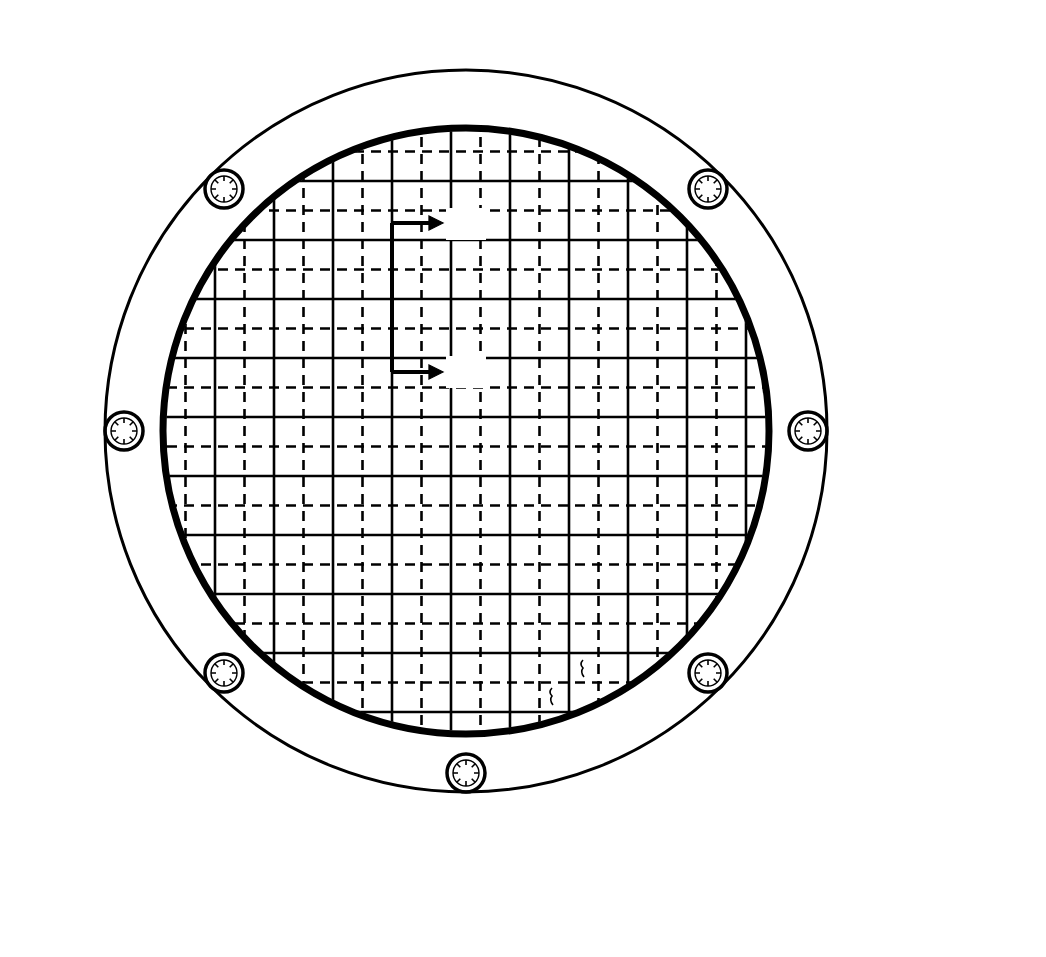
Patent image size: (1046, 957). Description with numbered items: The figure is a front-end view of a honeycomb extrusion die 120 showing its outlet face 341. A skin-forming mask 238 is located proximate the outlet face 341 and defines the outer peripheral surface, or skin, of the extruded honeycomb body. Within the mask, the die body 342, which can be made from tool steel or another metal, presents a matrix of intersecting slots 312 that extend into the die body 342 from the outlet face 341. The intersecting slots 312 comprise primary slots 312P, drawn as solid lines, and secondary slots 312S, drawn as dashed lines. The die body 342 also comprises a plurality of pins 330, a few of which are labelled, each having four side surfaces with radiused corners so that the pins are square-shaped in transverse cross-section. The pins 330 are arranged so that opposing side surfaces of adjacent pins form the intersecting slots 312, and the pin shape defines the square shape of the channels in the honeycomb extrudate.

The honeycomb extrusion die 120 is at (464, 471).
The skin-forming mask 238 is at (262, 98).
The intersecting slots 312 is at (472, 386).
The primary slots 312P is at (578, 178).
The secondary slots 312S is at (730, 327).
The pins 330 is at (553, 698).
The outlet face 341 is at (472, 410).
The die body 342 is at (780, 494).